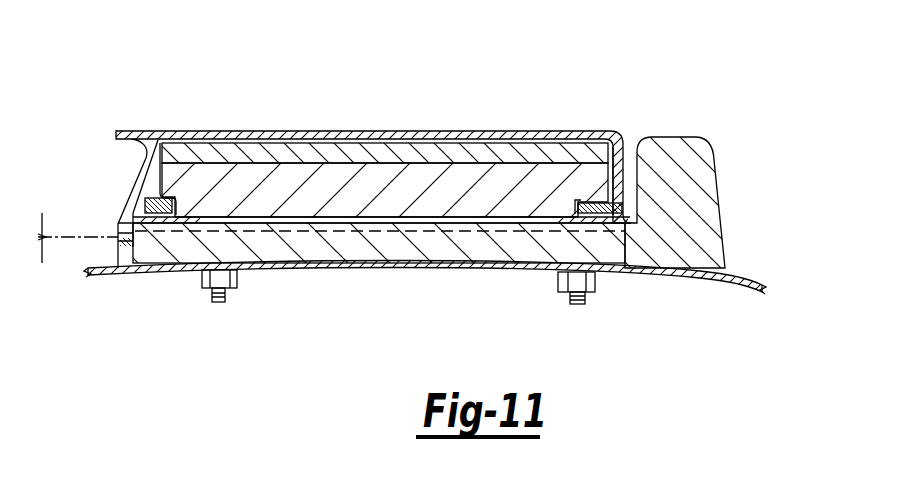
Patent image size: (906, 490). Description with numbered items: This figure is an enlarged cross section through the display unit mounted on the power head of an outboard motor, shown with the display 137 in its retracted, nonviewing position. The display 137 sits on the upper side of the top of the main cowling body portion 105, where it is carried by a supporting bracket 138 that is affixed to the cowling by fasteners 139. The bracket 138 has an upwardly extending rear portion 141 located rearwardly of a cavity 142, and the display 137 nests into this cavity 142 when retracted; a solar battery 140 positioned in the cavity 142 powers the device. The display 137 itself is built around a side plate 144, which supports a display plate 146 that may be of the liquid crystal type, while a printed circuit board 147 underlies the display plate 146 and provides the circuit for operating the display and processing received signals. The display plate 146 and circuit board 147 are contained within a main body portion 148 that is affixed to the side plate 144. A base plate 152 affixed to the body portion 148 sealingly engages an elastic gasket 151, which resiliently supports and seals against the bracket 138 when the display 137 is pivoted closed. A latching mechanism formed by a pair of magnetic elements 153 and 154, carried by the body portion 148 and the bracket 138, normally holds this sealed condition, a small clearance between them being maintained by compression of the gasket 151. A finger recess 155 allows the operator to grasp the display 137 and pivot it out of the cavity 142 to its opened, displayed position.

The upper main body portion 105 is at (740, 276).
The display 137 is at (176, 130).
The supporting bracket 138 is at (447, 240).
The fasteners 139 is at (215, 294).
The solar battery 140 is at (411, 218).
The upwardly extending rear portion 141 is at (688, 155).
The cavity 142 is at (628, 215).
The side plate 144 is at (370, 207).
The display plate 146 is at (327, 193).
The printed circuit board 147 is at (358, 150).
The main body portion 148 is at (263, 131).
The elastic gasket 151 is at (182, 268).
The base plate 152 is at (632, 215).
The magnetic element 153 is at (115, 233).
The magnetic element 154 is at (115, 244).
The finger recess 155 is at (150, 160).